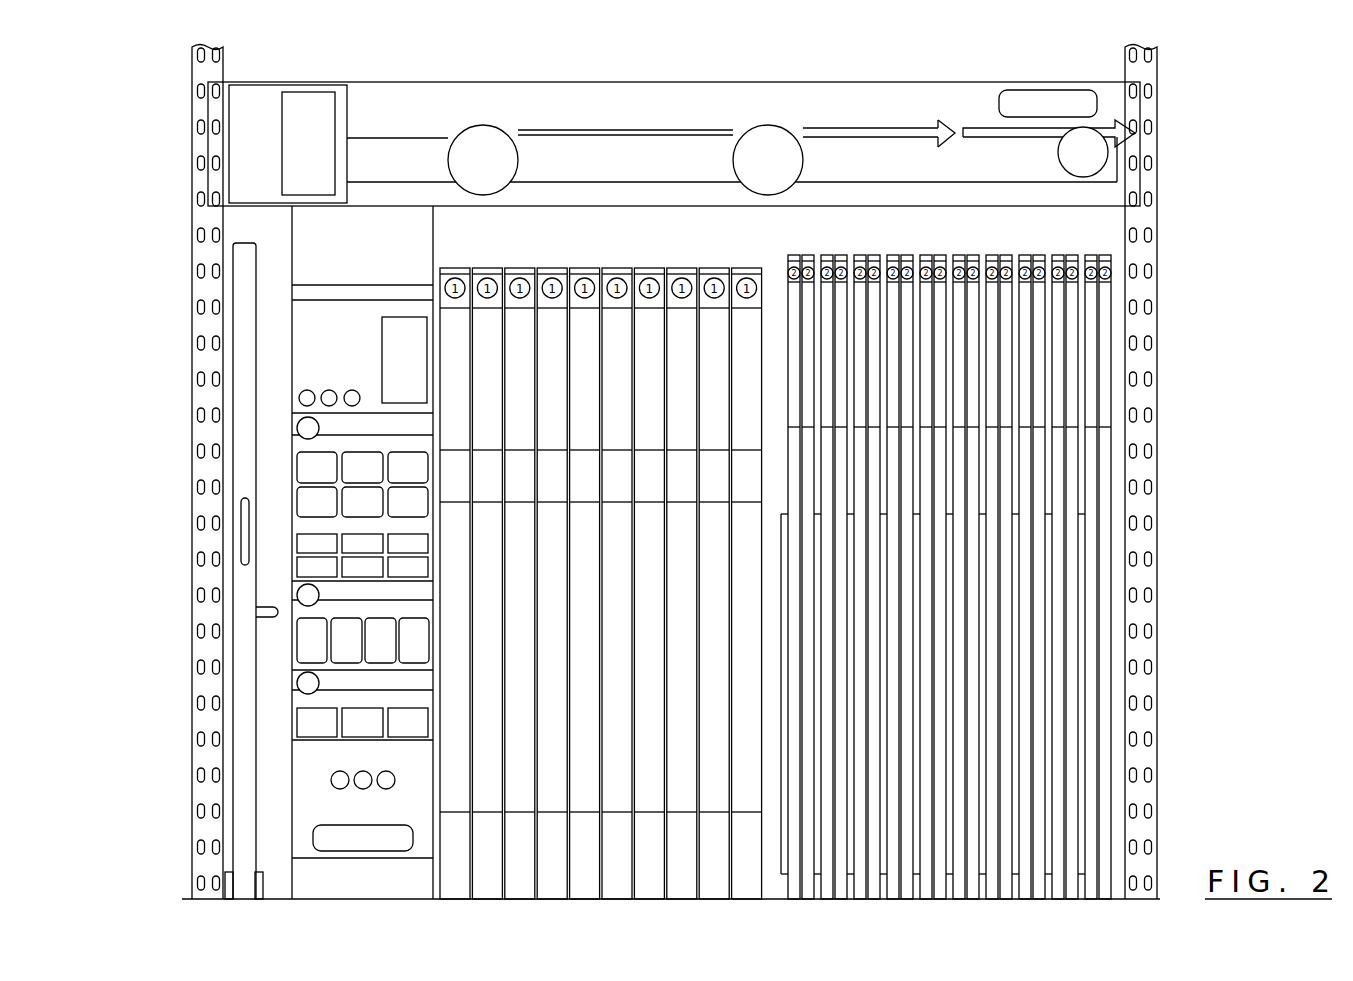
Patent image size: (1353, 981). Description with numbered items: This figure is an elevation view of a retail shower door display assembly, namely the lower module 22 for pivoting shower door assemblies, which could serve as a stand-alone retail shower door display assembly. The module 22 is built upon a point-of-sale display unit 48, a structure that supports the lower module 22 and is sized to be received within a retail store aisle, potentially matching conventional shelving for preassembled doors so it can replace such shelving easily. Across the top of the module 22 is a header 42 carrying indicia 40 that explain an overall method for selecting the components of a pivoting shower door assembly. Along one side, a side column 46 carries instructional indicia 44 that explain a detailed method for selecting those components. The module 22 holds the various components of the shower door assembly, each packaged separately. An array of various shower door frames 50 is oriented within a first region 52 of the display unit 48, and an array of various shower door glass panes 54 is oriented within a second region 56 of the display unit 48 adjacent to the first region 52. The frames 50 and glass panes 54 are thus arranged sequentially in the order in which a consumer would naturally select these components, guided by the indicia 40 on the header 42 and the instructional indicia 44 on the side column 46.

The lower module 22 is at (700, 472).
The indicia 40 is at (621, 161).
The header 42 is at (245, 206).
The instructional indicia 44 is at (280, 552).
The side column 46 is at (292, 368).
The point-of-sale display unit 48 is at (192, 575).
The shower door frames 50 is at (456, 268).
The first region 52 is at (555, 258).
The shower door glass panes 54 is at (800, 257).
The second region 56 is at (878, 245).